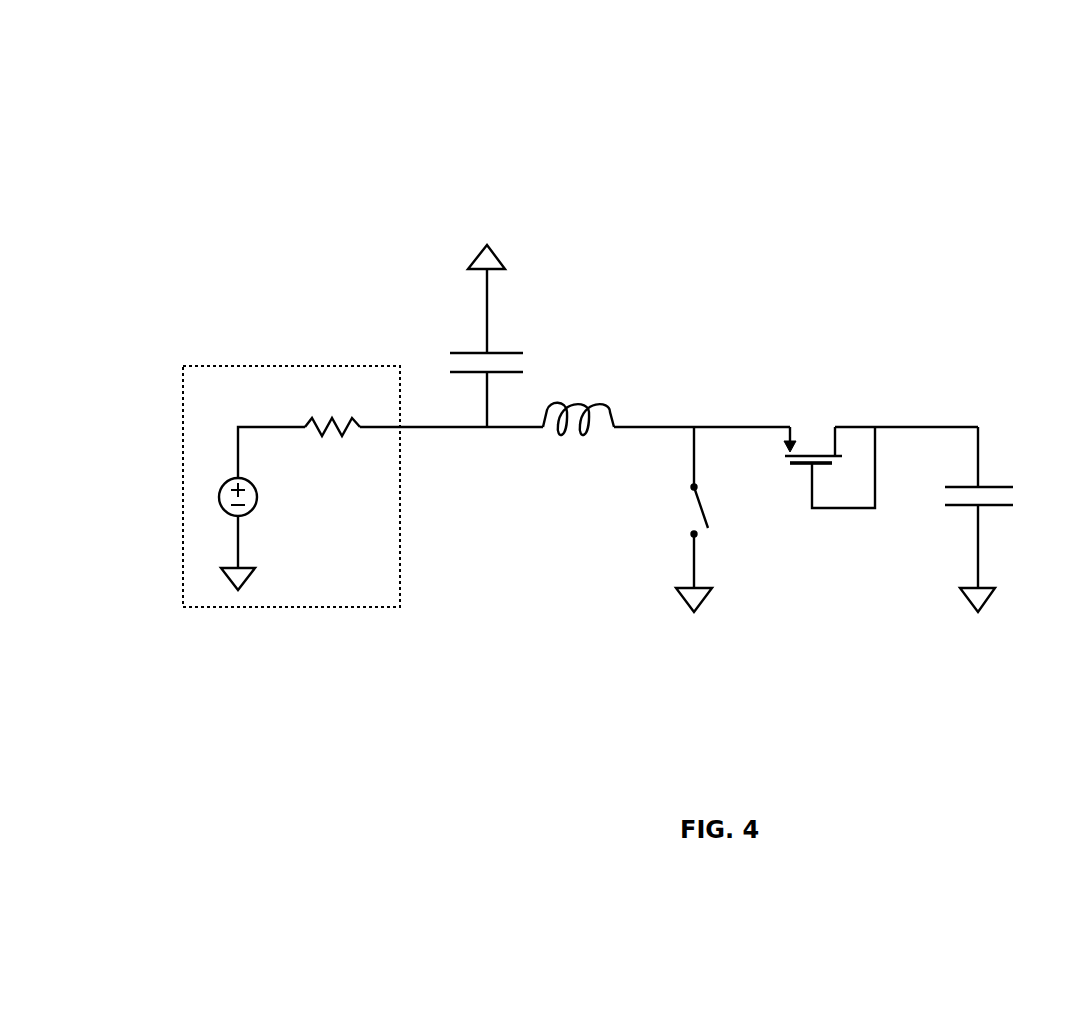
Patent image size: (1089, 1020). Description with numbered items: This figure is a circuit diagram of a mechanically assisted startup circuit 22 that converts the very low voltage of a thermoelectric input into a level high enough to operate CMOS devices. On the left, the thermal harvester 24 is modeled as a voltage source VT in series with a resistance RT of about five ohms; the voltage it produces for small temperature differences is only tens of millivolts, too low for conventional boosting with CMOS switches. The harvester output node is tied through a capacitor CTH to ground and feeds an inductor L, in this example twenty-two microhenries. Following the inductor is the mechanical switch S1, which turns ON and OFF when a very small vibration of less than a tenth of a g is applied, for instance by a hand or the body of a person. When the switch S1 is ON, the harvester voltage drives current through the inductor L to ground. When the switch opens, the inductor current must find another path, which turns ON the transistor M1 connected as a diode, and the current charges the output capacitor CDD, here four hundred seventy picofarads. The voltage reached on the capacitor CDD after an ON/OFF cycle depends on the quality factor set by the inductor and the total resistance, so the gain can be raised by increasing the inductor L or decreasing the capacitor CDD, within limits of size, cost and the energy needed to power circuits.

The mechanically assisted startup circuit 22 is at (145, 88).
The thermal harvester 24 is at (245, 620).
The thermal harvester resistance RT is at (332, 411).
The thermoelectric voltage source VT is at (254, 497).
The thermal harvester capacitor CTH is at (498, 336).
The inductor L is at (578, 407).
The mechanical switch S1 is at (629, 519).
The transistor M1 is at (829, 450).
The output capacitor CDD is at (988, 519).